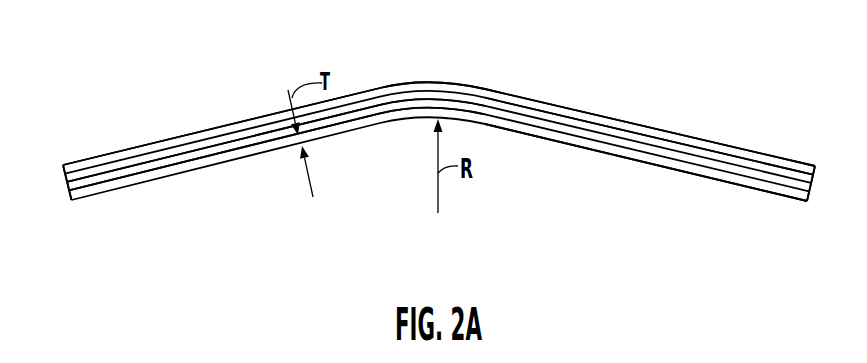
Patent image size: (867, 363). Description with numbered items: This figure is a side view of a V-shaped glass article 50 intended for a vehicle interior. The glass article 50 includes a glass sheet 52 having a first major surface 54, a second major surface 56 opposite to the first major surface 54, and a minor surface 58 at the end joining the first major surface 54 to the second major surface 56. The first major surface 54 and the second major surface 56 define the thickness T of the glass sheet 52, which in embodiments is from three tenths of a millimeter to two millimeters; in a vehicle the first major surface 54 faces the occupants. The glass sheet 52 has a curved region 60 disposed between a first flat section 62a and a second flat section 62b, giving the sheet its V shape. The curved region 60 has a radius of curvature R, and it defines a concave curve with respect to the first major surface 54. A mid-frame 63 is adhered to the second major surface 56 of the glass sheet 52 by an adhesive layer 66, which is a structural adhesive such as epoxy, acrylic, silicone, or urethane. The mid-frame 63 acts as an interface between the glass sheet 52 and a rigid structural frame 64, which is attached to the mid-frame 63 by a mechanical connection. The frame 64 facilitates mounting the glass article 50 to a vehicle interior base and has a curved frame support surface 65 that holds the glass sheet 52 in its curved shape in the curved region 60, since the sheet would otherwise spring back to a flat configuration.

The glass article 50 is at (526, 43).
The glass sheet 52 is at (617, 140).
The first major surface 54 is at (227, 155).
The second major surface 56 is at (147, 160).
The minor surface 58 is at (68, 197).
The curved region 60 is at (432, 80).
The first flat section 62a is at (205, 128).
The second flat section 62b is at (650, 118).
The mid-frame 63 is at (362, 107).
The frame 64 is at (740, 154).
The curved frame support surface 65 is at (503, 105).
The adhesive layer 66 is at (548, 123).